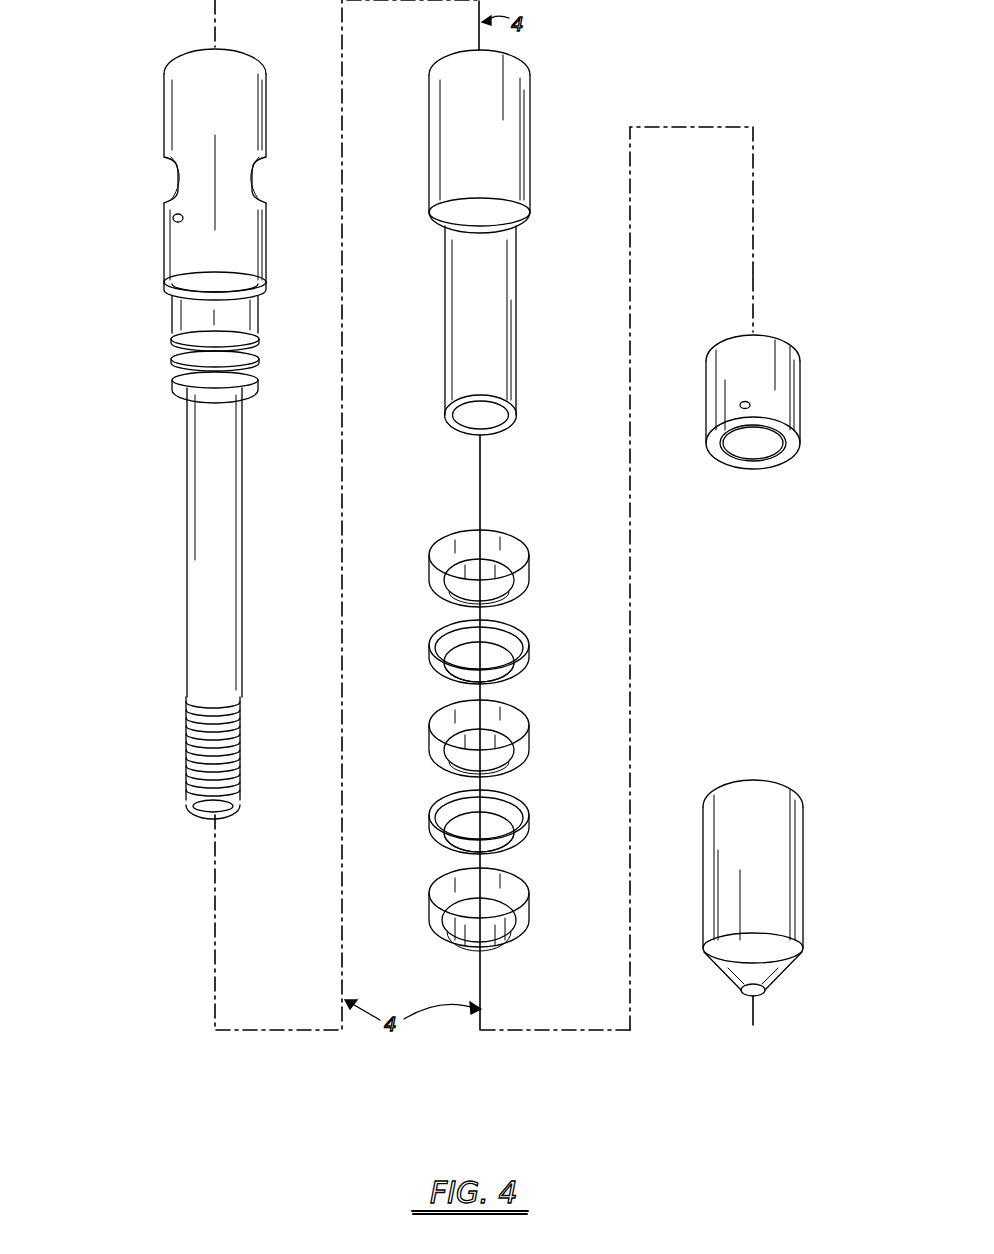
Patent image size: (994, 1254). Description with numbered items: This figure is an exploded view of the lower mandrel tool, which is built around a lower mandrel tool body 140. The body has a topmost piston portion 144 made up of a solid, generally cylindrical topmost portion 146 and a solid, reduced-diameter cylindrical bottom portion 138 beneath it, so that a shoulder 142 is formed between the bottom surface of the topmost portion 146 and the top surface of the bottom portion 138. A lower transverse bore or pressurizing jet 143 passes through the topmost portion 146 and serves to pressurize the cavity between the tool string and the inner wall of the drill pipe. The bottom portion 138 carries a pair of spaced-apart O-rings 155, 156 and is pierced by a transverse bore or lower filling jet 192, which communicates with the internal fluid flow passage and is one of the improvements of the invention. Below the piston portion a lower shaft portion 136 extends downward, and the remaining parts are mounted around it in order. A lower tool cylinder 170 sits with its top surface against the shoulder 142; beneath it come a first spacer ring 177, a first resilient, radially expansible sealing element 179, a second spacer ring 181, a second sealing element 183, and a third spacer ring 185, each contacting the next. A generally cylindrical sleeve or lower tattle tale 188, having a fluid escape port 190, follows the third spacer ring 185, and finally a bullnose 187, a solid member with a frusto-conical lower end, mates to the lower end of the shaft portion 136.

The topmost portion 146 is at (246, 103).
The lower transverse bore 143 is at (172, 219).
The topmost piston portion 144 is at (240, 234).
The shoulder 142 is at (168, 308).
The bottom portion 138 is at (240, 320).
The O-ring 155 is at (186, 341).
The O-ring 156 is at (183, 363).
The transverse bore 192 is at (178, 377).
The lower mandrel tool body 140 is at (186, 580).
The lower shaft portion 136 is at (226, 680).
The lower tool cylinder 170 is at (511, 133).
The first spacer ring 177 is at (510, 545).
The first sealing element 179 is at (530, 648).
The second spacer ring 181 is at (532, 731).
The second sealing element 183 is at (530, 824).
The third spacer ring 185 is at (530, 896).
The lower tattle tale 188 is at (778, 392).
The fluid escape port 190 is at (739, 405).
The bullnose 187 is at (783, 867).